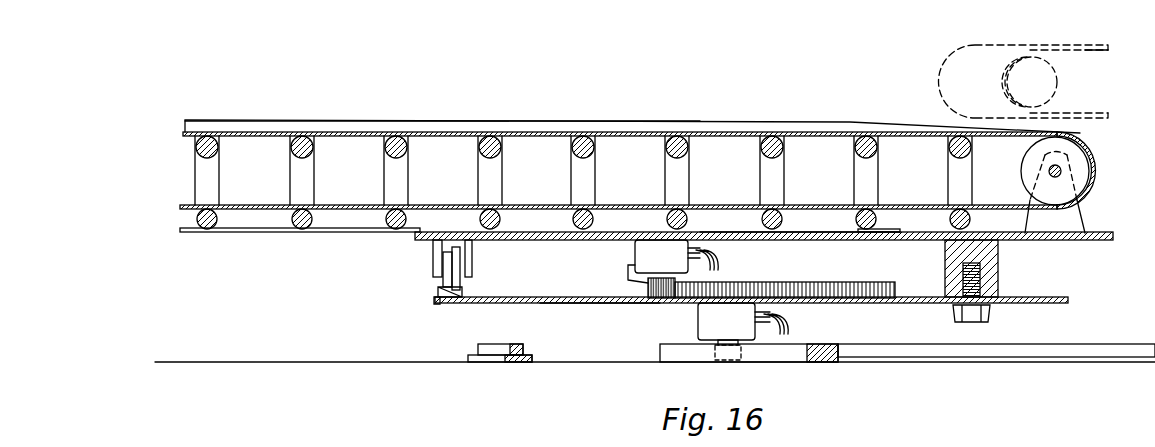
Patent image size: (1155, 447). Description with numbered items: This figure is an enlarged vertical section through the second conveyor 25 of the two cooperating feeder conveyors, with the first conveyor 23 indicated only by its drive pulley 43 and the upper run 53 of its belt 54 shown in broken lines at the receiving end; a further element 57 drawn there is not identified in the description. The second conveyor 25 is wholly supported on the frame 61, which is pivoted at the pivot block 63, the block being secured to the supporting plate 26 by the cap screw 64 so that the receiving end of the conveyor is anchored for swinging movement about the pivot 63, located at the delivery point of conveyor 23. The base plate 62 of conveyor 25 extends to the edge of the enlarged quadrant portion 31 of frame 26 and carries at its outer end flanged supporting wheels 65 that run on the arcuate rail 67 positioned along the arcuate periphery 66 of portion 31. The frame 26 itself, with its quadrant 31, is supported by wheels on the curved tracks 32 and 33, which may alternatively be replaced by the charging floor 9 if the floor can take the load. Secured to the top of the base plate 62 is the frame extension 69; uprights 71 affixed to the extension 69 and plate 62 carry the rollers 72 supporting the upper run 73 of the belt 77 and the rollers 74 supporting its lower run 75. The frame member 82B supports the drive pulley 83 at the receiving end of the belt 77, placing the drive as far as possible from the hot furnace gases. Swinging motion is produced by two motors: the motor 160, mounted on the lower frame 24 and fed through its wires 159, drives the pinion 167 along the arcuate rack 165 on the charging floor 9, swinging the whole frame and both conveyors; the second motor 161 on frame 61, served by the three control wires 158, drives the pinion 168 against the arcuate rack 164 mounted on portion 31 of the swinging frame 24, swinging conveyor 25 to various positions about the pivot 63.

The charging floor 9 is at (417, 364).
The first conveyor 23 is at (1097, 42).
The lower frame 24 is at (568, 304).
The second conveyor 25 is at (591, 118).
The supporting plate 26 is at (612, 304).
The quadrant 31 is at (510, 297).
The curved track 32 is at (1068, 358).
The curved track 33 is at (498, 362).
The drive pulley 43 is at (1026, 60).
The upper run 53 is at (1065, 46).
The first conveyor belt 54 is at (1086, 51).
The roll edge 57 is at (1070, 113).
The supporting frame 61 is at (1114, 235).
The base plate 62 is at (816, 240).
The pivot block 63 is at (1000, 268).
The cap screw 64 is at (992, 318).
The flanged supporting wheels 65 is at (438, 268).
The arcuate periphery 66 is at (436, 297).
The arcuate rail 67 is at (437, 304).
The frame extension 69 is at (337, 232).
The uprights 71 is at (478, 191).
The conveyor rollers 72 is at (570, 147).
The upper run 73 is at (651, 132).
The rollers 74 is at (578, 229).
The lower run 75 is at (611, 205).
The conveyor belt 77 is at (728, 128).
The frame member 82B is at (1075, 216).
The drive pulley 83 is at (1082, 166).
The control wires 158 is at (716, 264).
The feed wires 159 is at (791, 328).
The motor 160 is at (698, 322).
The motion transmitting motor 161 is at (633, 259).
The arcuate rack 164 is at (751, 282).
The arcuate rack 165 is at (794, 352).
The pinion 167 is at (729, 358).
The pinion 168 is at (648, 285).